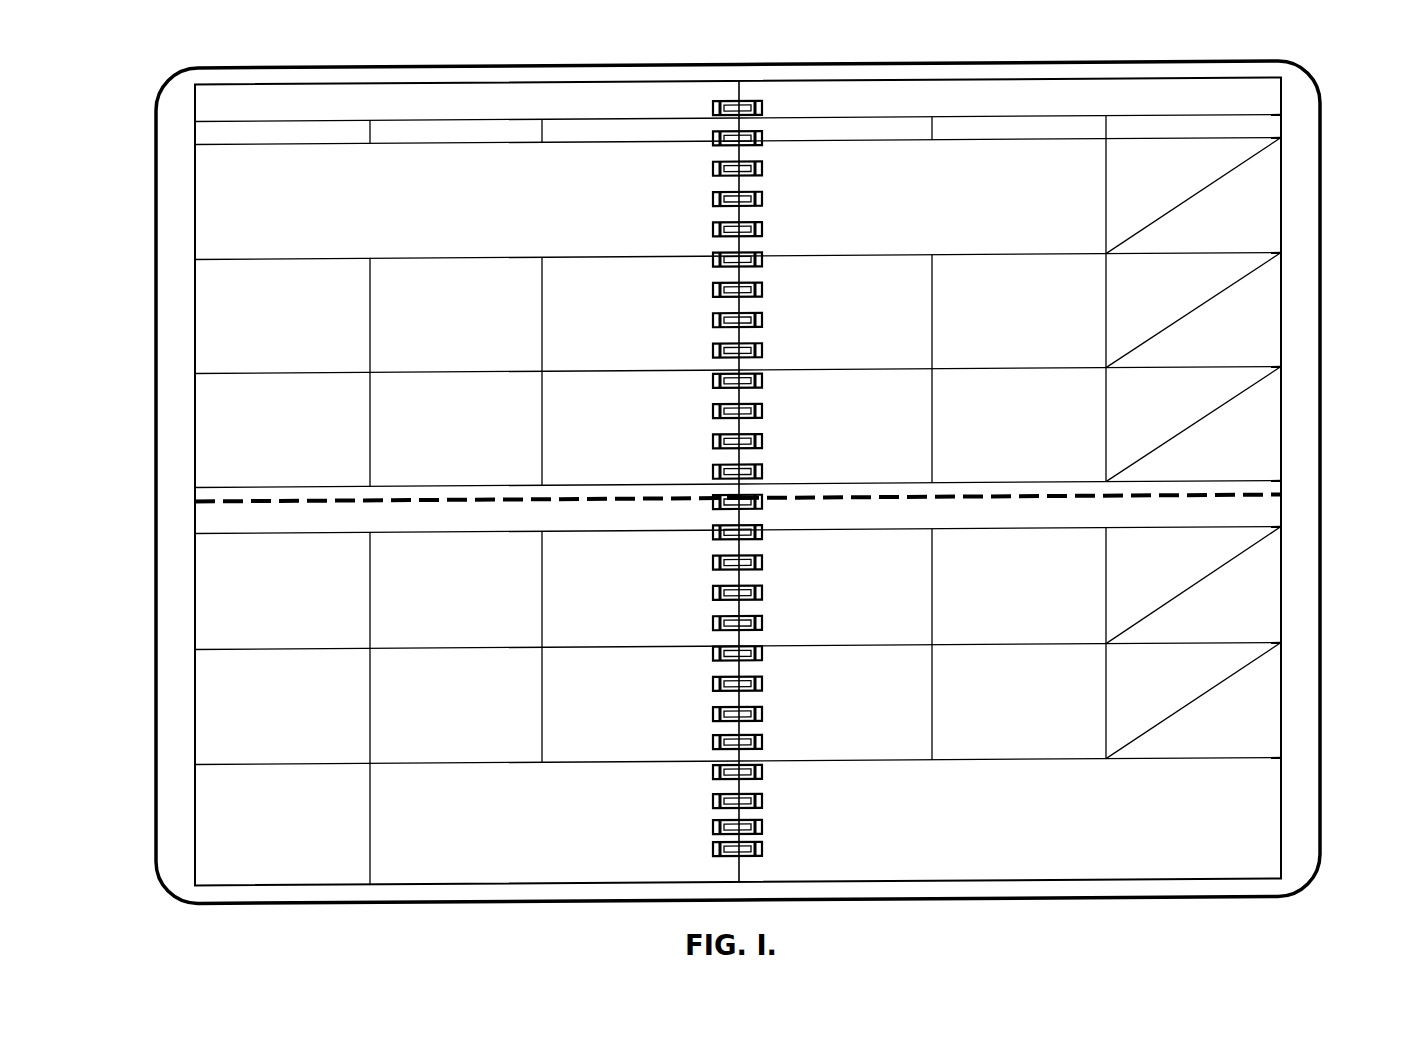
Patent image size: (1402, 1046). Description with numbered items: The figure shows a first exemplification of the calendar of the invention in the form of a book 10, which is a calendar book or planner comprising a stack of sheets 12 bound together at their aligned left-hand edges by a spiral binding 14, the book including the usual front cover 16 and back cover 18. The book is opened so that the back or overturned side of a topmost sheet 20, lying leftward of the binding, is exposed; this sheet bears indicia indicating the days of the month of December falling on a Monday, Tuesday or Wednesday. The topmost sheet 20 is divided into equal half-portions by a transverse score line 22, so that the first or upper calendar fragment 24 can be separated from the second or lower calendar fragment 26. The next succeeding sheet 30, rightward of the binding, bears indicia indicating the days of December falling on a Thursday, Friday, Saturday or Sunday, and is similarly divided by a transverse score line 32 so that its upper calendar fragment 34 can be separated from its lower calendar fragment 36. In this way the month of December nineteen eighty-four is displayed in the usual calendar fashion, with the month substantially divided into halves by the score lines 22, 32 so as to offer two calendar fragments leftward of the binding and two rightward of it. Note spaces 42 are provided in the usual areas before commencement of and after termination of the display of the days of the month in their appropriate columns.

The book 10 is at (756, 474).
The sheets 12 is at (280, 74).
The spiral binding 14 is at (763, 105).
The front cover 16 is at (240, 63).
The back cover 18 is at (1225, 54).
The topmost sheet 20 is at (418, 483).
The transverse score line 22 is at (471, 499).
The first or upper half portion or calendar fragment 24 is at (178, 326).
The second or lower half portion or calendar fragment 26 is at (178, 648).
The next succeeding sheet 30 is at (1062, 420).
The transverse score line 32 is at (1005, 499).
The first or upper half portion or calendar fragment 34 is at (1300, 327).
The second or lower half portion or calendar fragment 36 is at (1298, 644).
The note spaces 42 is at (576, 207).